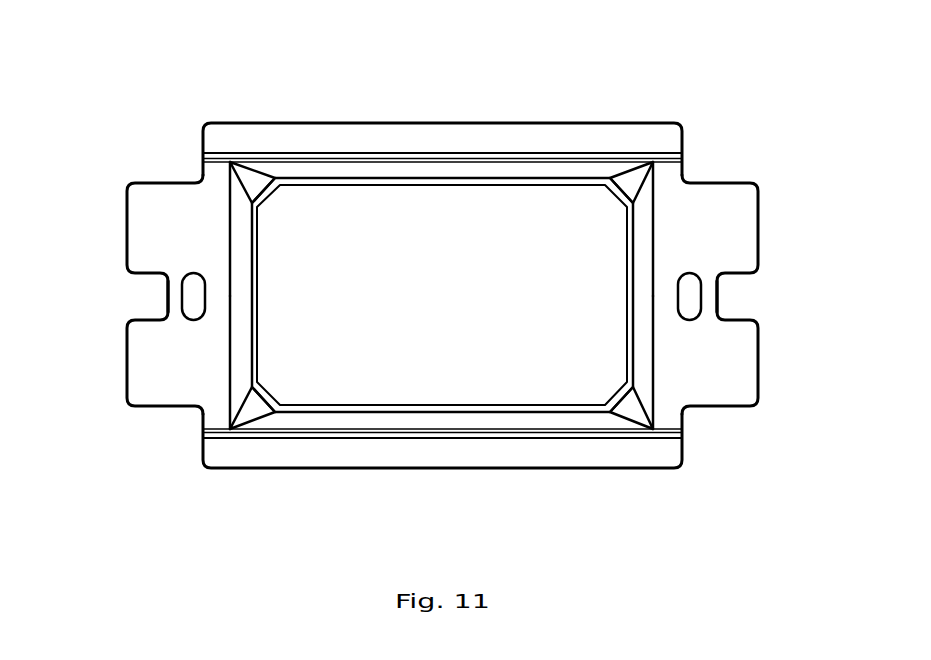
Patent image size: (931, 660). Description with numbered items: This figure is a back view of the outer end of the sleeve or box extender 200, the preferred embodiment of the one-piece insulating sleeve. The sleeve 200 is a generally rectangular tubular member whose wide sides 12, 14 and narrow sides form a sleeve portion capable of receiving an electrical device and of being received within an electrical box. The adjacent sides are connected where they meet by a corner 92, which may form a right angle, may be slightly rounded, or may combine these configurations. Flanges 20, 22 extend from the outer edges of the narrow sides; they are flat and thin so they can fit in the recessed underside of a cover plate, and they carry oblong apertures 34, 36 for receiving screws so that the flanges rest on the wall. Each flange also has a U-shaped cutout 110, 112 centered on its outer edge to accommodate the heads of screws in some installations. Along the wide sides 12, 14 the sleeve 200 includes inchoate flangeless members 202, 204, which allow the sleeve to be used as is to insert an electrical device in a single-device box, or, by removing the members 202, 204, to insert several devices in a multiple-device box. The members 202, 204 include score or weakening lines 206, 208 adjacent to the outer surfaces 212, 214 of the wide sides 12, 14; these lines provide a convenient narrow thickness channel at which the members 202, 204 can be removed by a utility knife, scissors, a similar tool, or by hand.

The sleeve or box extender 200 is at (633, 508).
The inchoate flangeless member 202 is at (505, 148).
The inchoate flangeless member 204 is at (527, 463).
The score or weakening line 206 is at (433, 430).
The score or weakening line 208 is at (427, 158).
The outer surface 212 is at (533, 168).
The outer surface 214 is at (543, 422).
The flange 20 is at (175, 235).
The flange 22 is at (717, 241).
The U-shaped cutout 110 is at (150, 295).
The U-shaped cutout 112 is at (732, 300).
The aperture 34 is at (192, 297).
The aperture 36 is at (690, 300).
The wide side 12 is at (443, 183).
The wide side 14 is at (397, 406).
The corner 92 is at (252, 182).